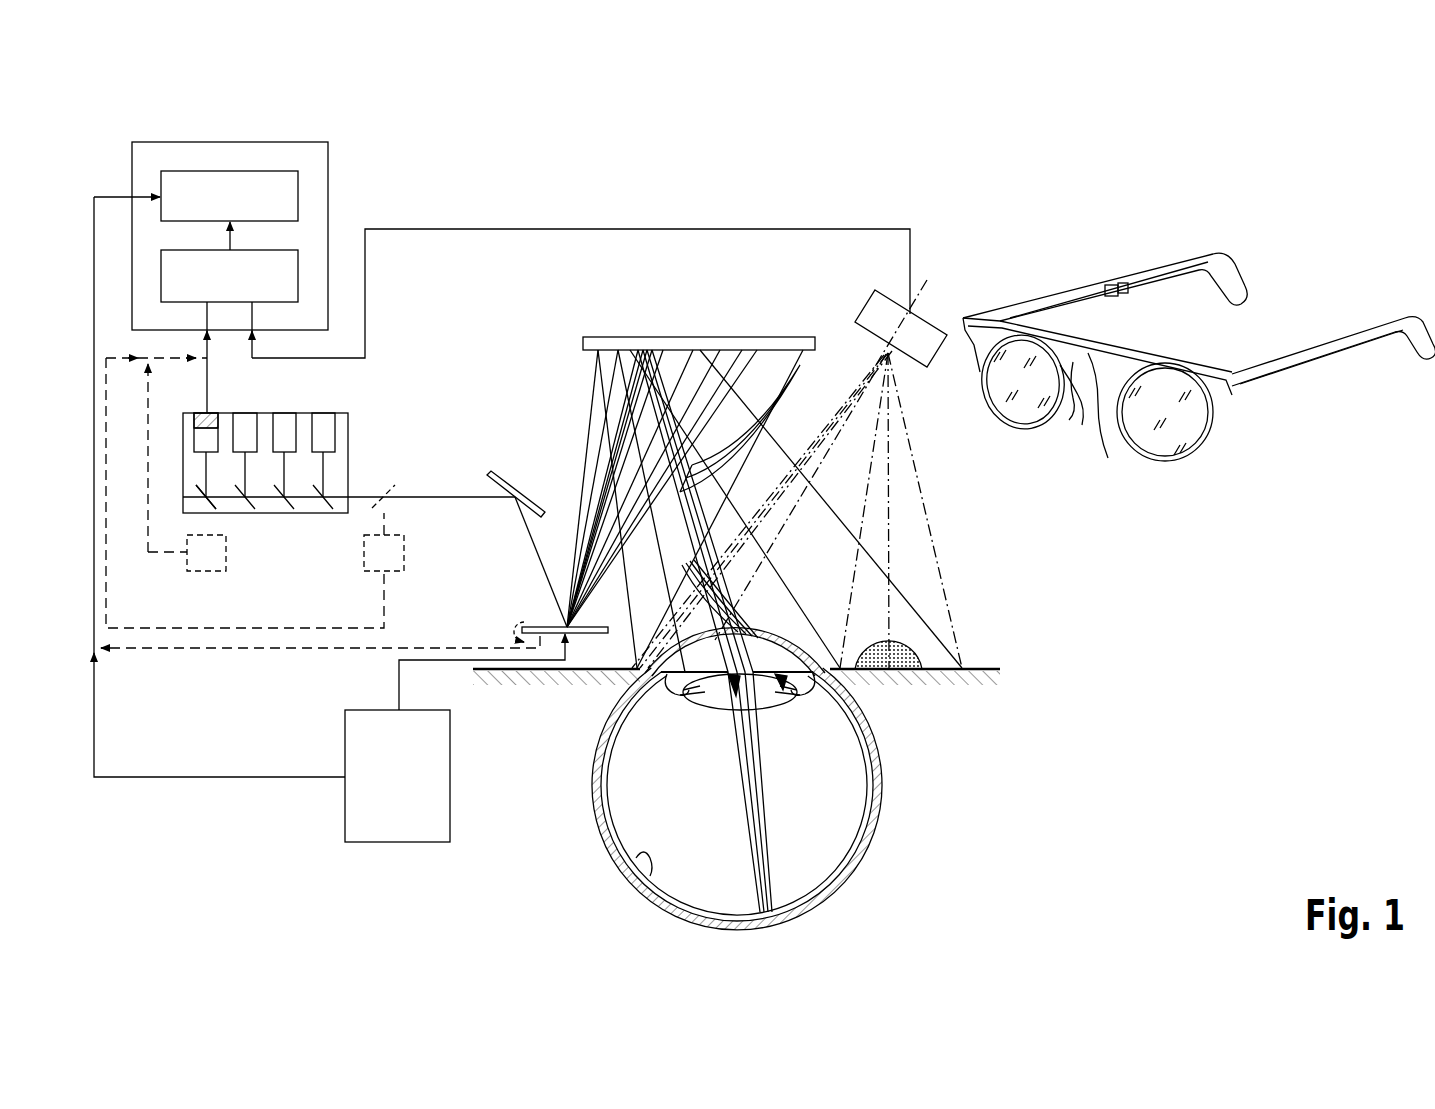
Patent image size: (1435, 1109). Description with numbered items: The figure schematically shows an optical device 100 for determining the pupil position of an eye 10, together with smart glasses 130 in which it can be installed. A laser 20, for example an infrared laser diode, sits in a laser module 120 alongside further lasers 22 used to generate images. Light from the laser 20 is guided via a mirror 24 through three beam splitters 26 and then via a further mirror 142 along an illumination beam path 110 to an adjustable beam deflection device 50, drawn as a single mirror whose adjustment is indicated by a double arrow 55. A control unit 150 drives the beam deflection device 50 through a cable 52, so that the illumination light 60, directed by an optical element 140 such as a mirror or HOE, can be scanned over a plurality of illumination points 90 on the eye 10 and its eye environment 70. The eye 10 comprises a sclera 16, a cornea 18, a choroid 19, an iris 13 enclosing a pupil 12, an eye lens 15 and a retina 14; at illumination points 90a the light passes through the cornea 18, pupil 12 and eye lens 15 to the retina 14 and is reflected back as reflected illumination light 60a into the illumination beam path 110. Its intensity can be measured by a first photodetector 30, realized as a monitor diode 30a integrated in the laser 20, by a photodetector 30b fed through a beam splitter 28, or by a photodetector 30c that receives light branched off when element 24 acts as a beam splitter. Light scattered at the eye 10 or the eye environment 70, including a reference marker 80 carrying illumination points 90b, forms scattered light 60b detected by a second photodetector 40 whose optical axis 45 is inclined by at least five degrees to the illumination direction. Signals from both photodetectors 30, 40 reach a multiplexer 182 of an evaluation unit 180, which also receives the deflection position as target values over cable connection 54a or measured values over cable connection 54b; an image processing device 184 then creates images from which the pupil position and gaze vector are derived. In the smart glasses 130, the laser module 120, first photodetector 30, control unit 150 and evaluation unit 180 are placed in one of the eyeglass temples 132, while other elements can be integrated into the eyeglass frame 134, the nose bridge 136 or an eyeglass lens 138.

The eye 10 is at (751, 779).
The pupil 12 is at (724, 736).
The iris 13 is at (674, 698).
The retina 14 is at (642, 867).
The eye lens 15 is at (709, 691).
The sclera 16 is at (596, 807).
The cornea 18 is at (802, 694).
The choroid 19 is at (615, 848).
The laser 20 is at (199, 430).
The further lasers 22 is at (314, 418).
The mirror 24 is at (205, 505).
The beam splitters 26 is at (284, 510).
The beam splitter 28 is at (391, 483).
The first photodetector 30 is at (1124, 293).
The monitor diode 30a is at (210, 420).
The photodetector 30b is at (364, 568).
The photodetector 30c is at (206, 572).
The second photodetector 40 is at (884, 312).
The optical axis 45 is at (922, 286).
The adjustable beam deflection device 50 is at (548, 637).
The cable 52 is at (399, 683).
The cable connection 54a is at (185, 778).
The cable connection 54b is at (186, 652).
The double arrow 55 is at (514, 631).
The illumination light 60 is at (586, 384).
The reflected illumination light 60a is at (759, 422).
The scattered light 60b is at (392, 517).
The eye environment 70 is at (495, 675).
The reference marker 80 is at (888, 672).
The illumination points 90 is at (680, 655).
The illumination points 90a is at (704, 575).
The illumination points 90b is at (847, 668).
The optical device 100 is at (958, 182).
The illumination beam path 110 is at (507, 518).
The laser module 120 is at (348, 430).
The smart glasses 130 is at (1180, 338).
The eyeglass temples 132 is at (1178, 272).
The eyeglass frame 134 is at (1068, 401).
The nose bridge 136 is at (1090, 353).
The eyeglass lens 138 is at (1010, 384).
The optical element 140 is at (688, 337).
The further mirror 142 is at (502, 478).
The control unit 150 is at (415, 790).
The evaluation unit 180 is at (330, 160).
The multiplexer 182 is at (250, 294).
The image processing device 184 is at (250, 212).